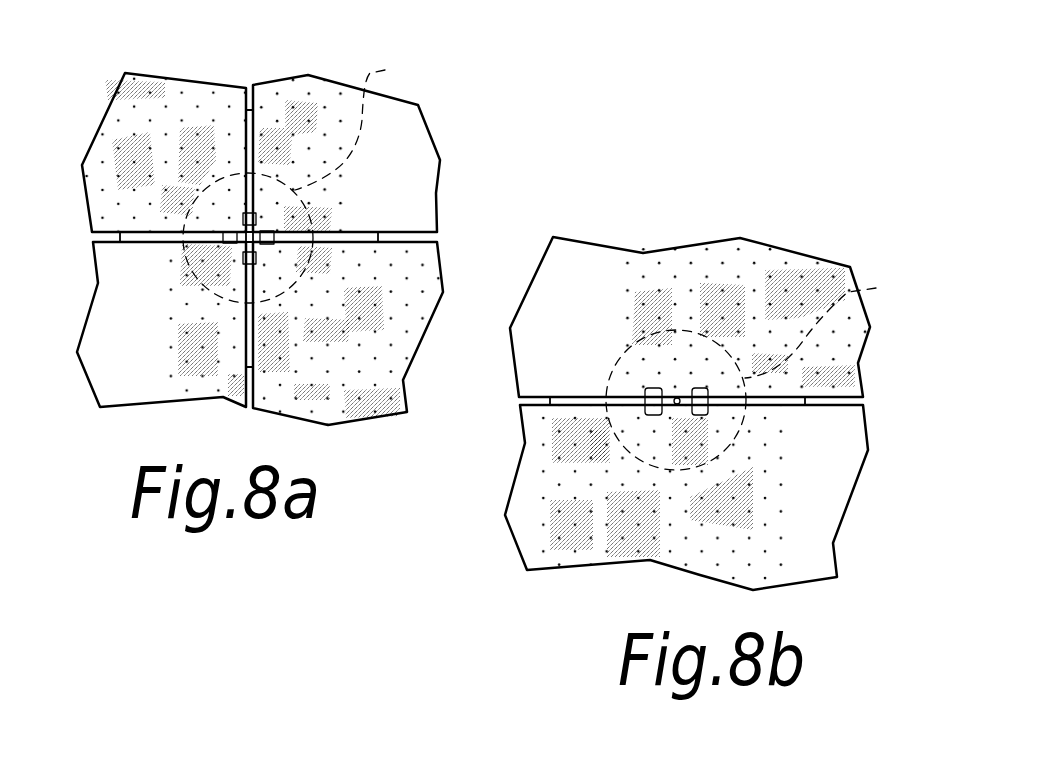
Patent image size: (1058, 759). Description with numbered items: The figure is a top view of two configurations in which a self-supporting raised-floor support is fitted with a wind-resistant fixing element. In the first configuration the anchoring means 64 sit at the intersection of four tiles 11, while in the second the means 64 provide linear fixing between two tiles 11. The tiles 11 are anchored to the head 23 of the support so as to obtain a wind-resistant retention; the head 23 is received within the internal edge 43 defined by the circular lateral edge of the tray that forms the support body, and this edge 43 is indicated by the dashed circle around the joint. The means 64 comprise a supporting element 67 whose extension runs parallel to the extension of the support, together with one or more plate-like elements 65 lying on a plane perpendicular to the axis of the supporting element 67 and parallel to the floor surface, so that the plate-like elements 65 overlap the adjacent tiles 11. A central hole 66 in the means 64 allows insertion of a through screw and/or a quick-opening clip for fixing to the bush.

In FIG. 8A, the tile 11 is at (122, 112).
In FIG. 8B, the tile 11 is at (573, 258).
In FIG. 8A, the head 23 is at (354, 235).
In FIG. 8B, the head 23 is at (570, 405).
In FIG. 8A, the internal edge 43 is at (301, 174).
In FIG. 8B, the internal edge 43 is at (759, 369).
In FIG. 8A, the means for anchoring 64 is at (232, 245).
In FIG. 8B, the means for anchoring 64 is at (710, 411).
In FIG. 8A, the plate-like element 65 is at (243, 222).
In FIG. 8B, the plate-like element 65 is at (700, 387).
In FIG. 8A, the central hole 66 is at (245, 231).
In FIG. 8B, the central hole 66 is at (678, 393).
In FIG. 8A, the supporting element 67 is at (262, 229).
In FIG. 8B, the supporting element 67 is at (690, 405).